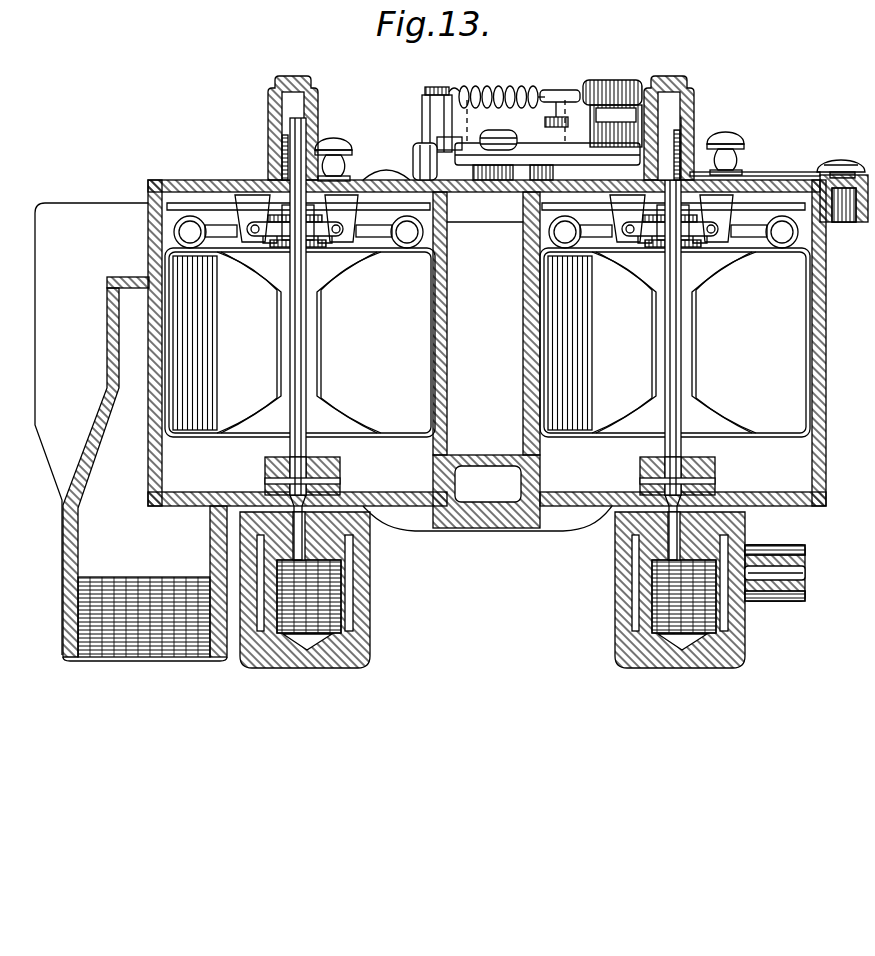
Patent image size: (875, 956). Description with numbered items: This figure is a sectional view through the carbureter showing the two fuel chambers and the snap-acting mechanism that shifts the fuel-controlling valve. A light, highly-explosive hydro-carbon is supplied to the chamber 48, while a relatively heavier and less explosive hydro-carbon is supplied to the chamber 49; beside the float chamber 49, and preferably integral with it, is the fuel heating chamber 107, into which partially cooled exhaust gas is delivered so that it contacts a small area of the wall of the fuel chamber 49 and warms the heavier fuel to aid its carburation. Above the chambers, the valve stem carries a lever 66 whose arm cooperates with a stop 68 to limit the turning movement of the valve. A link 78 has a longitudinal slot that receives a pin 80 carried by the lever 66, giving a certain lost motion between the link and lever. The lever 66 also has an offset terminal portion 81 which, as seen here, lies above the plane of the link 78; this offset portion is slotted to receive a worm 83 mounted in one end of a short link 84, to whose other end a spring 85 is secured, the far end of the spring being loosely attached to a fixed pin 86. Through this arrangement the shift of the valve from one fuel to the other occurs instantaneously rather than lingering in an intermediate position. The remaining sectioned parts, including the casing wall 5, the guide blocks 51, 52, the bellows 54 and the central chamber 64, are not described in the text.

The casing wall 5 is at (808, 375).
The chamber 48 is at (800, 454).
The chamber 49 is at (153, 478).
The guide block 51 is at (712, 464).
The guide block 52 is at (265, 465).
The bellows 54 is at (173, 380).
The central chamber 64 is at (487, 359).
The lever 66 is at (630, 158).
The stop 68 is at (415, 155).
The link 78 is at (492, 128).
The pin 80 is at (562, 117).
The offset terminal portion 81 is at (615, 92).
The worm 83 is at (669, 111).
The short link 84 is at (598, 78).
The spring 85 is at (497, 84).
The fixed pin 86 is at (421, 110).
The fuel heating chamber 107 is at (103, 450).